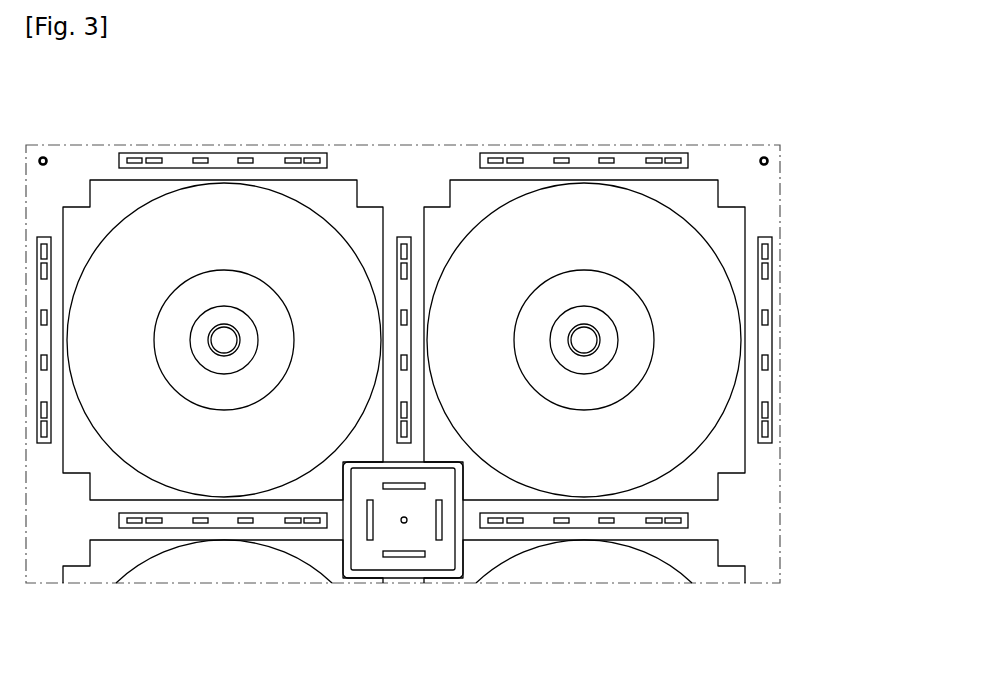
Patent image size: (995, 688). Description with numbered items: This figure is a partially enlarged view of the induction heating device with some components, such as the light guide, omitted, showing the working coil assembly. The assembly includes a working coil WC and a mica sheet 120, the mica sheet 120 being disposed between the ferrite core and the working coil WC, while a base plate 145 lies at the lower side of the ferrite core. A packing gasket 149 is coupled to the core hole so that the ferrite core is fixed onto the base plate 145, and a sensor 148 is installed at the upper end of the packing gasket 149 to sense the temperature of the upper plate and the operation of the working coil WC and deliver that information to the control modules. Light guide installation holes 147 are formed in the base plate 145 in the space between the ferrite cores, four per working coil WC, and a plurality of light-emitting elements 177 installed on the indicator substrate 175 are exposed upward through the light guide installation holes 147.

The mica sheet 120 is at (700, 486).
The base plate 145 is at (404, 160).
The light guide installation hole 147 is at (455, 340).
The sensor 148 is at (600, 338).
The packing gasket 149 is at (600, 360).
The indicator substrate 175 is at (535, 520).
The light-emitting element 177 is at (772, 250).
The working coil WC is at (652, 426).